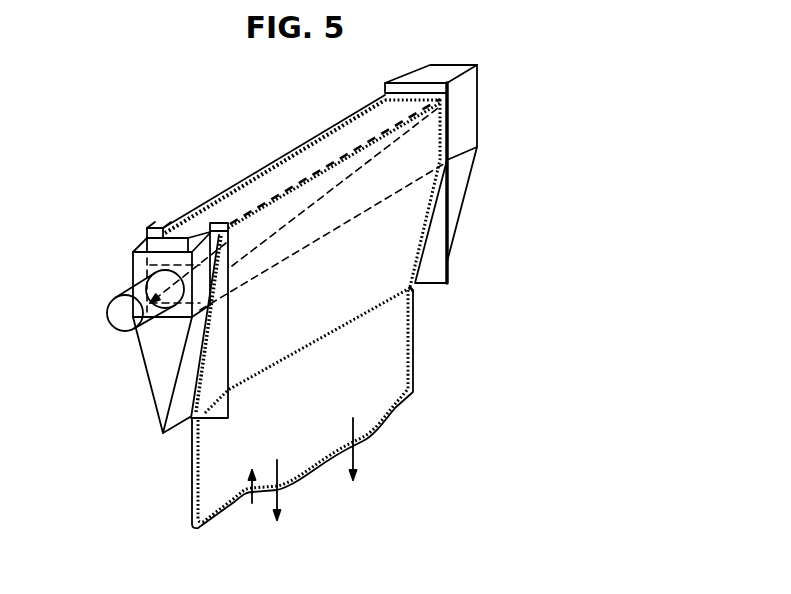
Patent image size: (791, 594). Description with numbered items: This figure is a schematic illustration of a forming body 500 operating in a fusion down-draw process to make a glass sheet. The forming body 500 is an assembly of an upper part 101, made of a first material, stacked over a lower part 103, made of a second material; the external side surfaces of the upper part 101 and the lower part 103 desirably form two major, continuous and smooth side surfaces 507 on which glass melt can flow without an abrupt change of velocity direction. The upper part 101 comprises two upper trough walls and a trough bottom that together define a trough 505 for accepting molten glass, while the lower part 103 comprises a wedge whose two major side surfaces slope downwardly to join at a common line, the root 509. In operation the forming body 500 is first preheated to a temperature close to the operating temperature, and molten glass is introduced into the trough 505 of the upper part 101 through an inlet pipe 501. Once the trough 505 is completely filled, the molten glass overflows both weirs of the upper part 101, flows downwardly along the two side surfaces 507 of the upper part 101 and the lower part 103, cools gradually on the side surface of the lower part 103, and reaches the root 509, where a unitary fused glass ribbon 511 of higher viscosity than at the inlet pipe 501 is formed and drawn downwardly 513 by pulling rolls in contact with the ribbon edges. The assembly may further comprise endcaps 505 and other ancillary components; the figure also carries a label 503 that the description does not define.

The forming body 500 is at (517, 127).
The inlet pipe 501 is at (127, 315).
The upper rail 503 is at (268, 232).
The trough 505 is at (462, 230).
The side surfaces 507 is at (334, 188).
The root 509 is at (181, 432).
The glass ribbon 511 is at (247, 495).
The downward drawing 513 is at (363, 452).
The upper part 101 is at (408, 163).
The lower part 103 is at (412, 292).